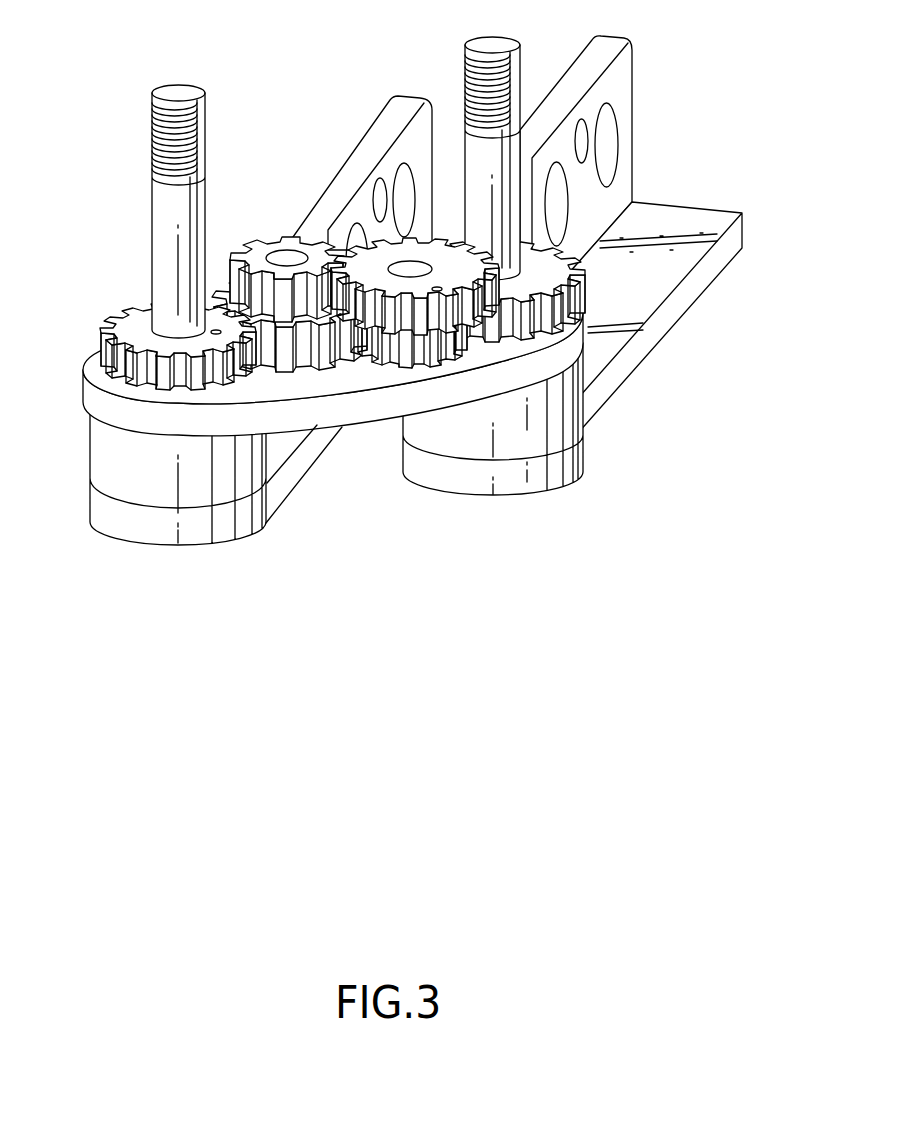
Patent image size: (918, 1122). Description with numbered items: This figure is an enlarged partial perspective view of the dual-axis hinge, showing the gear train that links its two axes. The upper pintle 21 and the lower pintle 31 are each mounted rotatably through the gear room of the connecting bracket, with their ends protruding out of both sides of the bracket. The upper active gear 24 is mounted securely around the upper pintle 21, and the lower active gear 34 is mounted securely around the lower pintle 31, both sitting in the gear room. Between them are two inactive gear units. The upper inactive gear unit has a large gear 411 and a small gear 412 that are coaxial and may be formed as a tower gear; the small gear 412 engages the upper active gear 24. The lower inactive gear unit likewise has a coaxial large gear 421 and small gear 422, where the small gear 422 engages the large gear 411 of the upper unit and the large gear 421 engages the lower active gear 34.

The upper pintle 21 is at (500, 195).
The upper active gear 24 is at (567, 277).
The lower pintle 31 is at (167, 243).
The lower active gear 34 is at (115, 325).
The large gear 411 is at (403, 252).
The small gear 412 is at (435, 353).
The large gear 421 is at (292, 347).
The small gear 422 is at (288, 242).